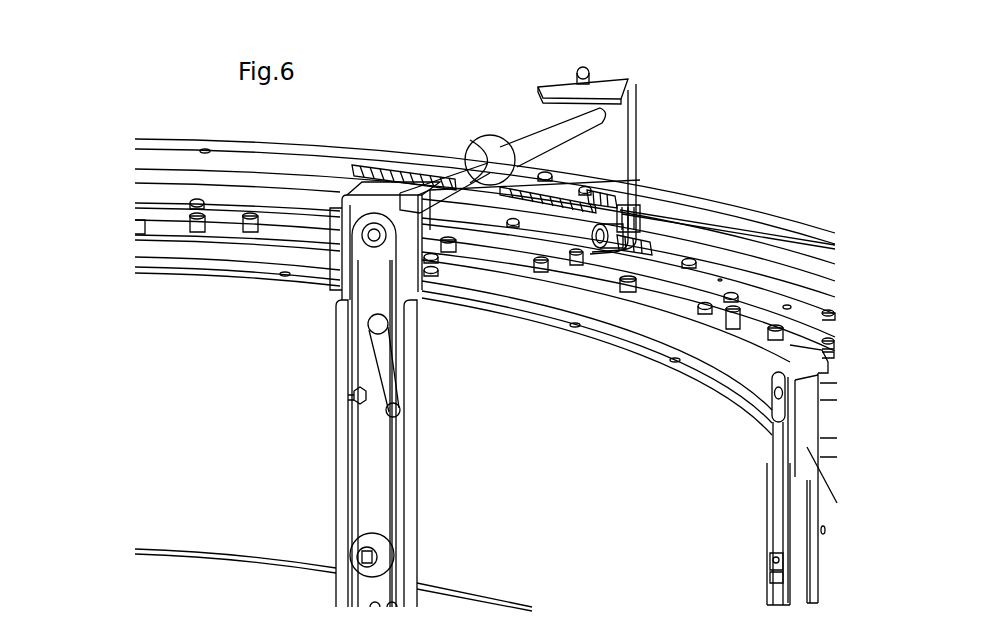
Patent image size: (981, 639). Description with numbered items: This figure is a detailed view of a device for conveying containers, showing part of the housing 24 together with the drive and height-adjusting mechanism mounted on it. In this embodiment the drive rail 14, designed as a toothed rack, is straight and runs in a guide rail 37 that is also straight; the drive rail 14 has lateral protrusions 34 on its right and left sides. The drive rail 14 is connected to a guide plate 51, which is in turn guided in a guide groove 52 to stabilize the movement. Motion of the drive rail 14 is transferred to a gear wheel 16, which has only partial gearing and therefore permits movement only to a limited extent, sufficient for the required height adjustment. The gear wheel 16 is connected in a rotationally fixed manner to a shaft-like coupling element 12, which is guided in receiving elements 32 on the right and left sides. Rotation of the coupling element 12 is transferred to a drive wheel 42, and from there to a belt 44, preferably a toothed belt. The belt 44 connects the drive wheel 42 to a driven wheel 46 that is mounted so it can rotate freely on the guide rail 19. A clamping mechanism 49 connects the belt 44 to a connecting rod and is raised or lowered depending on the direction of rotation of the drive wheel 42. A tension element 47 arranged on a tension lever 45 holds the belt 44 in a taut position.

The coupling element 12 is at (563, 130).
The drive rail 14 is at (618, 190).
The gear wheel 16 is at (480, 150).
The guide rail 19 is at (410, 493).
The housing 24 is at (615, 492).
The receiving element 32 is at (358, 198).
The protrusion 34 is at (603, 228).
The guide rail 37 is at (678, 252).
The drive wheel 42 is at (362, 246).
The belt 44 is at (392, 440).
The tension lever 45 is at (380, 352).
The driven wheel 46 is at (388, 557).
The tension element 47 is at (399, 407).
The clamping mechanism 49 is at (358, 398).
The guide plate 51 is at (483, 203).
The guide groove 52 is at (493, 205).